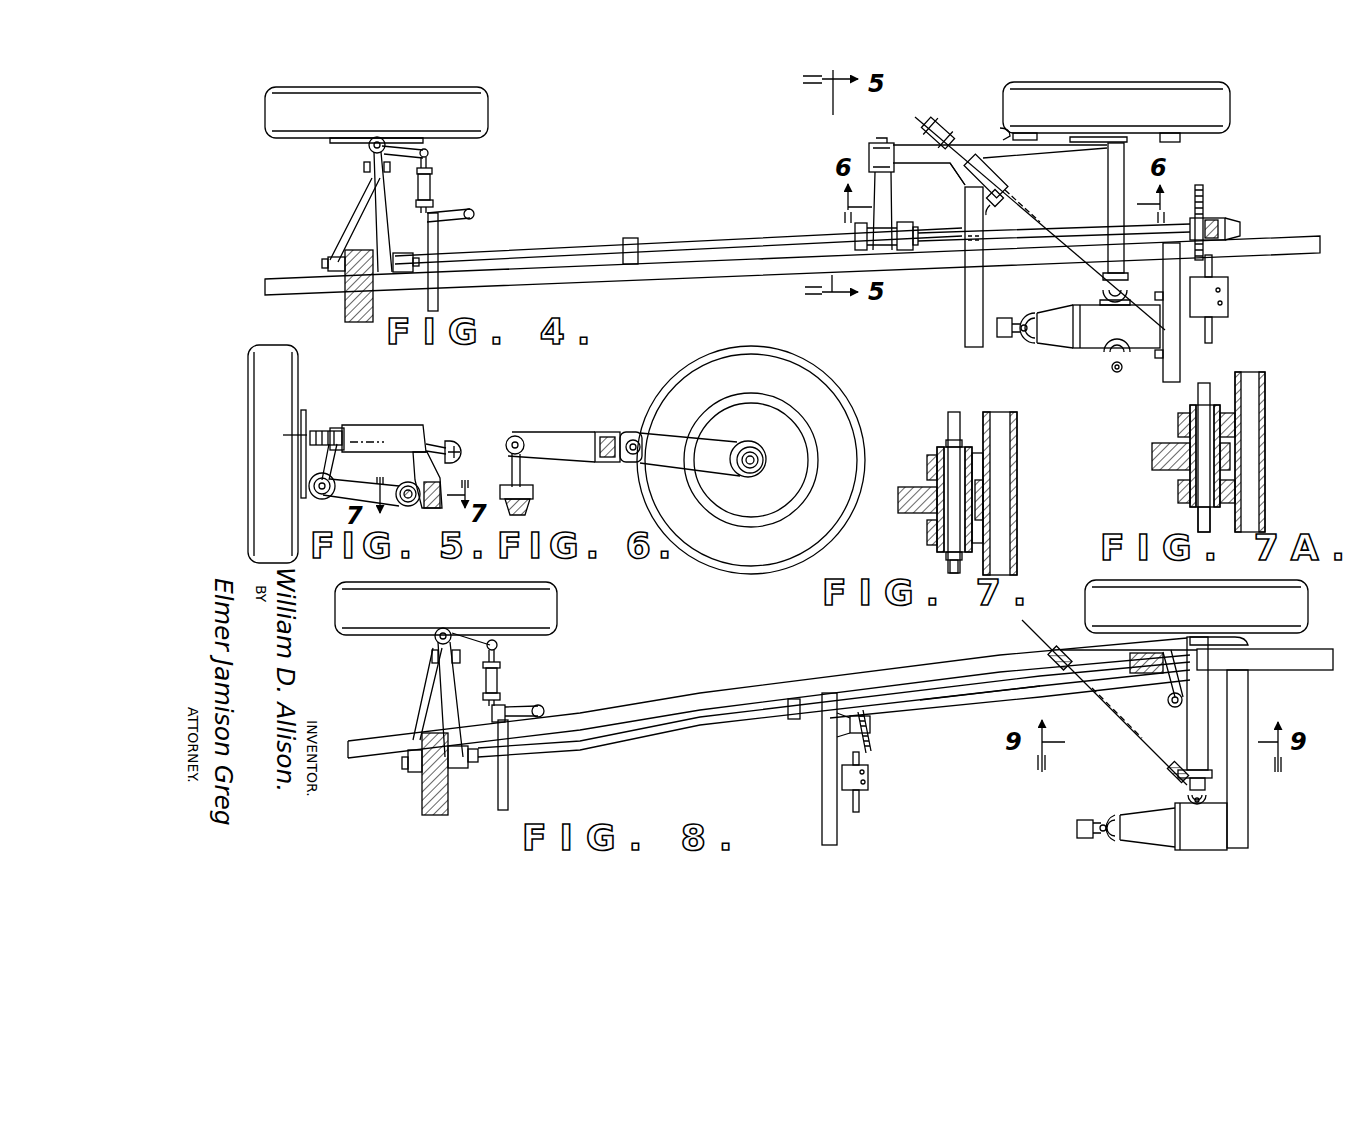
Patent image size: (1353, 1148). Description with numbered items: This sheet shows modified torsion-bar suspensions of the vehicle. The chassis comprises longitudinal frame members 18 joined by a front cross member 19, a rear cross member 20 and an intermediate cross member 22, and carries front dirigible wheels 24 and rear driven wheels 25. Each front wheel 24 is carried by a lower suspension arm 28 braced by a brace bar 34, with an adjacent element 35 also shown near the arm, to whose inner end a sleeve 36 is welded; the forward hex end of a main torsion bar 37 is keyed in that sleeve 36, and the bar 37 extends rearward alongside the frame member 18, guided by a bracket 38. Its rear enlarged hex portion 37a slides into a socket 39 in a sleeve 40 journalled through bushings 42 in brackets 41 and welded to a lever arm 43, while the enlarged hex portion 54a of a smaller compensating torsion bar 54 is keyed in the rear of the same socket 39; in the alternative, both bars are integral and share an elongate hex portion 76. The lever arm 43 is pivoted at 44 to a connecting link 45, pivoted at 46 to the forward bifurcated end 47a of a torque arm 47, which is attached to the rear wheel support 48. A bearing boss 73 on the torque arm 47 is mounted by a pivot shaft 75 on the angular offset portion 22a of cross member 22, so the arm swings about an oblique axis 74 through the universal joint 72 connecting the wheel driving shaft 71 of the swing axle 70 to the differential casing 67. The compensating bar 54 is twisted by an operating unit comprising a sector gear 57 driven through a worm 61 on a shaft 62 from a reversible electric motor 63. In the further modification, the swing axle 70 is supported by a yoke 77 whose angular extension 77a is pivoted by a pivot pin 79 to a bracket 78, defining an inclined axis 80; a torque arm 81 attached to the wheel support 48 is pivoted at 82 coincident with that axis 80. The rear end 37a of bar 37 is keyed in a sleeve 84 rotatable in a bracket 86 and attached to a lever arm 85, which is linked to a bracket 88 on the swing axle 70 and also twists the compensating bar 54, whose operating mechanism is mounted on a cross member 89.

In FIG. 4, the longitudinal frame member 18 is at (694, 274).
In FIG. 5, the longitudinal frame member 18 is at (443, 486).
In FIG. 7, the longitudinal frame member 18 is at (1018, 481).
In FIG. 7A, the longitudinal frame member 18 is at (1267, 470).
In FIG. 8, the longitudinal frame member 18 is at (670, 700).
In FIG. 4, the front cross member 19 is at (345, 306).
In FIG. 8, the front cross member 19 is at (448, 800).
In FIG. 4, the rear cross member 20 is at (1181, 366).
In FIG. 8, the rear cross member 20 is at (1248, 793).
In FIG. 4, the intermediate cross member 22 is at (965, 298).
In FIG. 4, the angular offset portion 22a is at (1006, 178).
In FIG. 6, the angular offset portion 22a is at (606, 432).
In FIG. 4, the front dirigible wheel 24 is at (478, 104).
In FIG. 8, the front dirigible wheel 24 is at (558, 606).
In FIG. 4, the rear driven wheel 25 is at (1230, 110).
In FIG. 5, the rear driven wheel 25 is at (305, 378).
In FIG. 6, the rear driven wheel 25 is at (770, 367).
In FIG. 8, the rear driven wheel 25 is at (1308, 603).
In FIG. 4, the lower suspension arm 28 is at (385, 215).
In FIG. 8, the lower suspension arm 28 is at (440, 683).
In FIG. 4, the brace bar 34 is at (350, 212).
In FIG. 4, the shock absorber 35 is at (442, 199).
In FIG. 8, the shock absorber 35 is at (509, 695).
In FIG. 4, the sleeve 36 is at (405, 253).
In FIG. 4, the main torsion bar 37 is at (549, 251).
In FIG. 7, the main torsion bar 37 is at (950, 568).
In FIG. 7A, the main torsion bar 37 is at (1198, 520).
In FIG. 8, the main torsion bar 37 is at (607, 745).
In FIG. 7, the enlarged hex portion 37a is at (946, 555).
In FIG. 4, the bracket 38 is at (640, 248).
In FIG. 8, the bracket 38 is at (790, 720).
In FIG. 7, the socket 39 is at (948, 495).
In FIG. 7A, the socket 39 is at (1222, 428).
In FIG. 4, the sleeve 40 is at (917, 230).
In FIG. 7, the sleeve 40 is at (937, 450).
In FIG. 7A, the sleeve 40 is at (1222, 408).
In FIG. 4, the bracket 41 is at (904, 225).
In FIG. 7, the bracket 41 is at (927, 460).
In FIG. 7, the bushing 42 is at (975, 453).
In FIG. 4, the lever arm 43 is at (893, 196).
In FIG. 5, the lever arm 43 is at (345, 490).
In FIG. 6, the lever arm 43 is at (530, 510).
In FIG. 7, the lever arm 43 is at (898, 505).
In FIG. 7A, the lever arm 43 is at (1165, 470).
In FIG. 5, the pivotal connection 44 is at (318, 498).
In FIG. 6, the pivotal connection 44 is at (535, 495).
In FIG. 5, the connecting link 45 is at (340, 433).
In FIG. 6, the connecting link 45 is at (523, 474).
In FIG. 4, the pivotal connection 46 is at (872, 143).
In FIG. 5, the pivotal connection 46 is at (345, 430).
In FIG. 6, the pivotal connection 46 is at (520, 436).
In FIG. 4, the torque arm 47 is at (1003, 145).
In FIG. 6, the torque arm 47 is at (558, 432).
In FIG. 5, the forward bifurcated end 47a is at (338, 430).
In FIG. 4, the rear wheel support 48 is at (1177, 140).
In FIG. 6, the rear wheel support 48 is at (758, 420).
In FIG. 8, the rear wheel support 48 is at (1250, 640).
In FIG. 4, the compensating torsion bar 54 is at (1072, 229).
In FIG. 7, the compensating torsion bar 54 is at (957, 412).
In FIG. 7A, the compensating torsion bar 54 is at (1198, 392).
In FIG. 8, the compensating torsion bar 54 is at (947, 706).
In FIG. 7, the enlarged hex portion 54a is at (948, 447).
In FIG. 4, the sector gear 57 is at (1205, 191).
In FIG. 8, the sector gear 57 is at (872, 745).
In FIG. 4, the worm 61 is at (1228, 222).
In FIG. 4, the shaft 62 is at (1213, 267).
In FIG. 8, the shaft 62 is at (862, 762).
In FIG. 4, the electric motor 63 is at (1228, 312).
In FIG. 8, the electric motor 63 is at (868, 790).
In FIG. 4, the differential casing 67 is at (1078, 326).
In FIG. 8, the differential casing 67 is at (1213, 828).
In FIG. 4, the swing axle 70 is at (1108, 172).
In FIG. 5, the swing axle 70 is at (437, 442).
In FIG. 8, the swing axle 70 is at (1210, 710).
In FIG. 4, the wheel driving shaft 71 is at (1126, 285).
In FIG. 8, the wheel driving shaft 71 is at (1212, 778).
In FIG. 4, the universal joint 72 is at (1103, 292).
In FIG. 5, the universal joint 72 is at (461, 441).
In FIG. 8, the universal joint 72 is at (1210, 790).
In FIG. 4, the bearing boss 73 is at (947, 128).
In FIG. 6, the bearing boss 73 is at (632, 430).
In FIG. 4, the oblique axis 74 is at (1030, 193).
In FIG. 5, the oblique axis 74 is at (385, 441).
In FIG. 4, the pivot shaft 75 is at (992, 208).
In FIG. 6, the pivot shaft 75 is at (641, 449).
In FIG. 7A, the elongate hex portion 76 is at (1232, 458).
In FIG. 8, the yoke 77 is at (1203, 762).
In FIG. 8, the angular extension 77a is at (1147, 827).
In FIG. 8, the bracket 78 is at (1153, 805).
In FIG. 8, the pivot pin 79 is at (1180, 765).
In FIG. 8, the inclined axis 80 is at (1125, 742).
In FIG. 8, the torque arm 81 is at (1122, 650).
In FIG. 8, the pivot 82 is at (1064, 648).
In FIG. 8, the sleeve 84 is at (1150, 653).
In FIG. 8, the lever arm 85 is at (1165, 695).
In FIG. 8, the bracket 86 is at (1112, 688).
In FIG. 8, the bracket 88 is at (1170, 708).
In FIG. 8, the cross member 89 is at (838, 833).